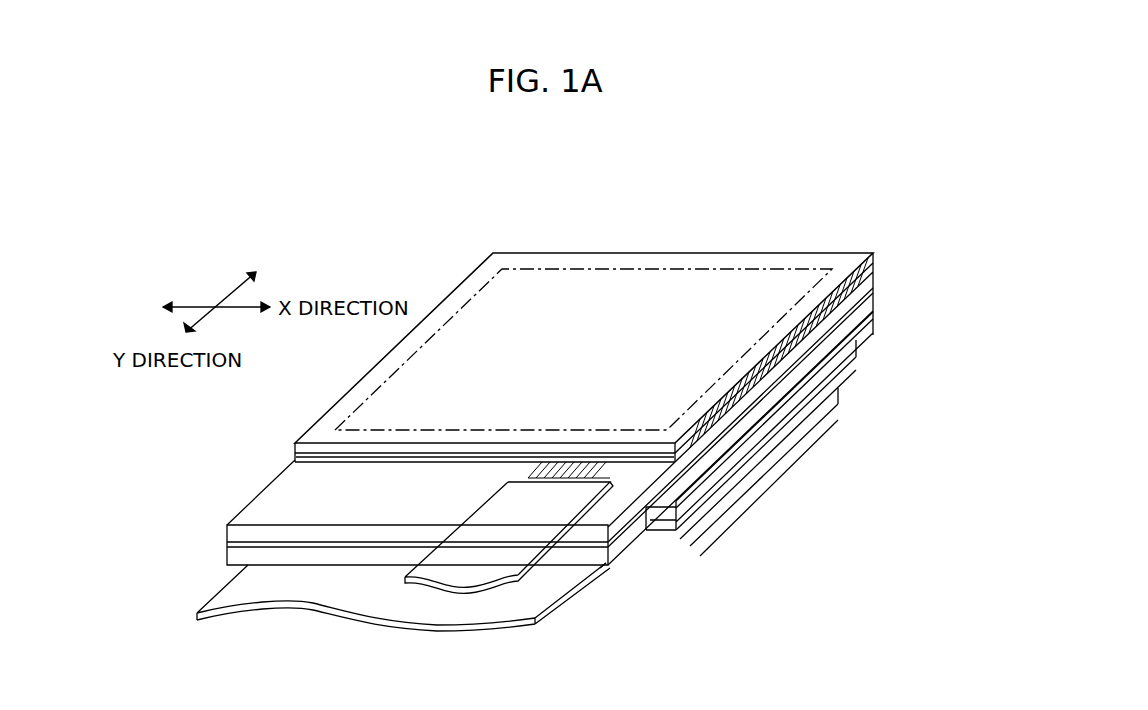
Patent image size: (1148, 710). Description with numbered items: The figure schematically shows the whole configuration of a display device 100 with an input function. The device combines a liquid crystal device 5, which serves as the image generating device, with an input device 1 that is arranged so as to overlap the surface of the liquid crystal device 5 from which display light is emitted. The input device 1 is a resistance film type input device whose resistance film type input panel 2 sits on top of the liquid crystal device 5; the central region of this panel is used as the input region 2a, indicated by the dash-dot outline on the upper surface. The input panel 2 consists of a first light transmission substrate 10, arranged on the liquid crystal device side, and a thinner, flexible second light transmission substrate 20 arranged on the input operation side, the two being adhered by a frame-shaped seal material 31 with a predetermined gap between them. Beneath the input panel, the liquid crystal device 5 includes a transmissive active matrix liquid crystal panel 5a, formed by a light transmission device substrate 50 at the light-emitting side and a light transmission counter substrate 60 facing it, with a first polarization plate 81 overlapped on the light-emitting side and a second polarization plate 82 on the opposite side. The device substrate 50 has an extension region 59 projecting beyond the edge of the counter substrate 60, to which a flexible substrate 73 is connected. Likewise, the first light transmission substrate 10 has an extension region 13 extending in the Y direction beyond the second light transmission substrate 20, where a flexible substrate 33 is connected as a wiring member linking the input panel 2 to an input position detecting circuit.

The display device with input function 100 is at (421, 214).
The input device 1 is at (578, 242).
The resistance film type input panel 2 is at (748, 191).
The input region 2a is at (626, 266).
The first light transmission substrate 10 is at (803, 348).
The second light transmission substrate 20 is at (843, 284).
The seal material 31 is at (860, 278).
The first polarization plate 81 is at (866, 303).
The device substrate 50 is at (852, 323).
The counter substrate 60 is at (842, 356).
The second polarization plate 82 is at (823, 378).
The liquid crystal device 5 is at (970, 245).
The liquid crystal panel 5a is at (938, 333).
The extension region 13 is at (395, 506).
The flexible substrate 73 is at (440, 601).
The flexible substrate 33 is at (507, 557).
The extension region 59 is at (598, 578).